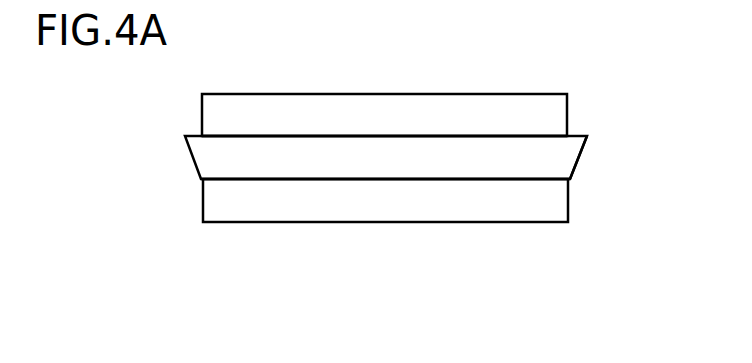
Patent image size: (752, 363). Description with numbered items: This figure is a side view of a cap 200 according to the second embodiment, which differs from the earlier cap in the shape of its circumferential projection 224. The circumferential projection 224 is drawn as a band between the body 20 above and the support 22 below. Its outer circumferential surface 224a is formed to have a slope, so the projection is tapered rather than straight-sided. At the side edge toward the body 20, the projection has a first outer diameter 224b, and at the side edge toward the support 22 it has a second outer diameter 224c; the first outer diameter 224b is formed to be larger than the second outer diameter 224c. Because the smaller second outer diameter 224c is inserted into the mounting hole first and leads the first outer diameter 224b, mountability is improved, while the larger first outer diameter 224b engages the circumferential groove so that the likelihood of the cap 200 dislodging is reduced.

The body 20 is at (545, 103).
The support 22 is at (562, 205).
The cap 200 is at (367, 253).
The circumferential projection 224 is at (568, 145).
The outer circumferential surface 224a is at (578, 157).
The first outer diameter 224b is at (290, 136).
The second outer diameter 224c is at (283, 179).